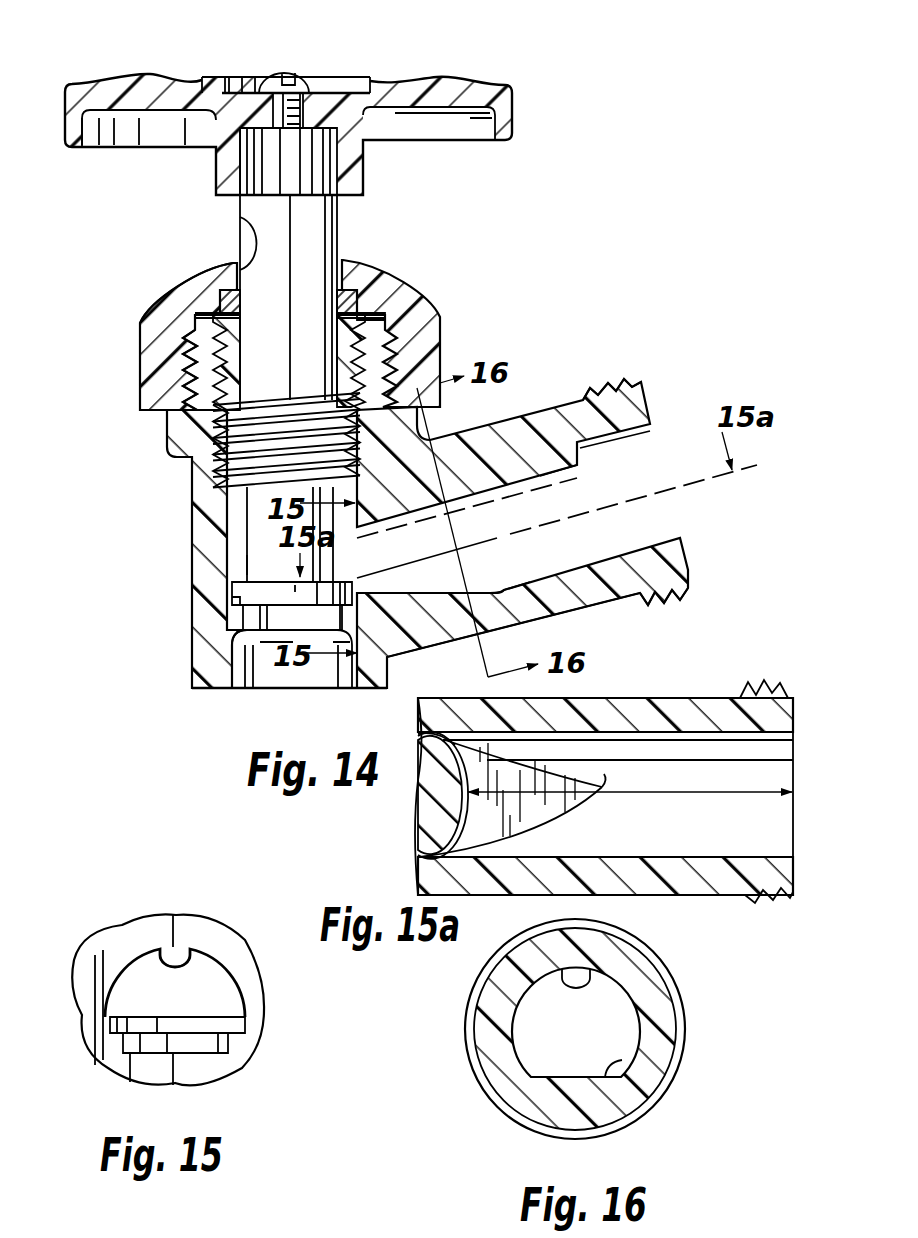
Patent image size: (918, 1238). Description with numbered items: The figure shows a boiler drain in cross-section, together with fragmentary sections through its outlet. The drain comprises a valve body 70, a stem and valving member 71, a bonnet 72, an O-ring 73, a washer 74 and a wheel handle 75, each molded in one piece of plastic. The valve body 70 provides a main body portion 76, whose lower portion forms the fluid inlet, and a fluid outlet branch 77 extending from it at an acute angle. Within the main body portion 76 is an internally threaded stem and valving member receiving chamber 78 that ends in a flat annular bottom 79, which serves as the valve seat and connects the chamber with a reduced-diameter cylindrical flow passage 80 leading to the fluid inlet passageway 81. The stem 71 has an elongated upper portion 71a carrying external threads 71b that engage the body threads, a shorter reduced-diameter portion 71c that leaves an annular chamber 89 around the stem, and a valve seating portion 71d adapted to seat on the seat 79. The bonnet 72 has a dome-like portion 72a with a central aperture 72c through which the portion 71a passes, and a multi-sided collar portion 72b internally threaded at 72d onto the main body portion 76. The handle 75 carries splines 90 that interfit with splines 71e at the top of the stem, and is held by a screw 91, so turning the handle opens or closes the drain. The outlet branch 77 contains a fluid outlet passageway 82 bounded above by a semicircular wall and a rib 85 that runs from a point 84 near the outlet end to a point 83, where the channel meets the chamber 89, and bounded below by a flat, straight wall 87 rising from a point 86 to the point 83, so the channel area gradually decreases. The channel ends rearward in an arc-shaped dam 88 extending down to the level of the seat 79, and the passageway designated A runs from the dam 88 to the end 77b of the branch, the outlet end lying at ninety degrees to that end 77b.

In FIG. 14, the valve body 70 is at (185, 498).
In FIG. 14, the stem and valving member 71 is at (338, 229).
In FIG. 14, the elongated upper portion of the stem 71a is at (237, 234).
In FIG. 14, the external threads 71b is at (228, 487).
In FIG. 14, the reduced-diameter stem portion 71c is at (240, 566).
In FIG. 14, the valve seating portion 71d is at (195, 673).
In FIG. 15A, the valve seating portion 71d is at (427, 775).
In FIG. 14, the splines on the stem 71e is at (305, 169).
In FIG. 14, the bonnet 72 is at (437, 313).
In FIG. 14, the dome-like portion of the bonnet 72a is at (178, 299).
In FIG. 14, the multi-sided collar portion 72b is at (440, 339).
In FIG. 14, the central aperture of the bonnet 72c is at (240, 228).
In FIG. 14, the internal threads of the bonnet collar 72d is at (185, 370).
In FIG. 14, the O-ring 73 is at (346, 291).
In FIG. 14, the washer 74 is at (375, 298).
In FIG. 14, the wheel handle 75 is at (495, 83).
In FIG. 14, the main body portion 76 is at (232, 585).
In FIG. 15, the main body portion 76 is at (263, 1039).
In FIG. 14, the fluid outlet branch 77 is at (505, 413).
In FIG. 15A, the fluid outlet branch 77 is at (628, 698).
In FIG. 16, the fluid outlet branch 77 is at (652, 971).
In FIG. 14, the end of the boiler drain outlet branch 77b is at (641, 394).
In FIG. 15A, the end of the boiler drain outlet branch 77b is at (793, 700).
In FIG. 14, the stem and valving member receiving chamber 78 is at (240, 558).
In FIG. 14, the annular bottom / valve seat 79 is at (242, 623).
In FIG. 15A, the annular bottom / valve seat 79 is at (428, 739).
In FIG. 14, the cylindrical flow passage 80 is at (258, 633).
In FIG. 15, the cylindrical flow passage 80 is at (215, 1043).
In FIG. 14, the fluid inlet passageway 81 is at (352, 677).
In FIG. 14, the fluid outlet passageway or channel 82 is at (655, 546).
In FIG. 15A, the fluid outlet passageway or channel 82 is at (780, 853).
In FIG. 15, the fluid outlet passageway or channel 82 is at (230, 976).
In FIG. 16, the fluid outlet passageway or channel 82 is at (640, 1026).
In FIG. 14, the point of communication with the chamber 83 is at (360, 558).
In FIG. 14, the inner end point of the rib 84 is at (583, 448).
In FIG. 14, the rib 85 is at (557, 473).
In FIG. 15, the rib 85 is at (186, 967).
In FIG. 16, the rib 85 is at (578, 986).
In FIG. 14, the inner end point of the lower wall 86 is at (498, 590).
In FIG. 15A, the inner end point of the lower wall 86 is at (605, 788).
In FIG. 14, the lower wall of the outlet passageway 87 is at (428, 591).
In FIG. 15A, the lower wall of the outlet passageway 87 is at (530, 771).
In FIG. 15, the lower wall of the outlet passageway 87 is at (232, 1015).
In FIG. 16, the lower wall of the outlet passageway 87 is at (622, 1064).
In FIG. 14, the dam 88 is at (330, 603).
In FIG. 15A, the dam 88 is at (418, 819).
In FIG. 15, the dam 88 is at (147, 1026).
In FIG. 14, the annular chamber 89 is at (238, 523).
In FIG. 14, the splines on the handle 90 is at (245, 163).
In FIG. 14, the screw 91 is at (298, 79).
In FIG. 15A, the passageway length designation A is at (738, 791).